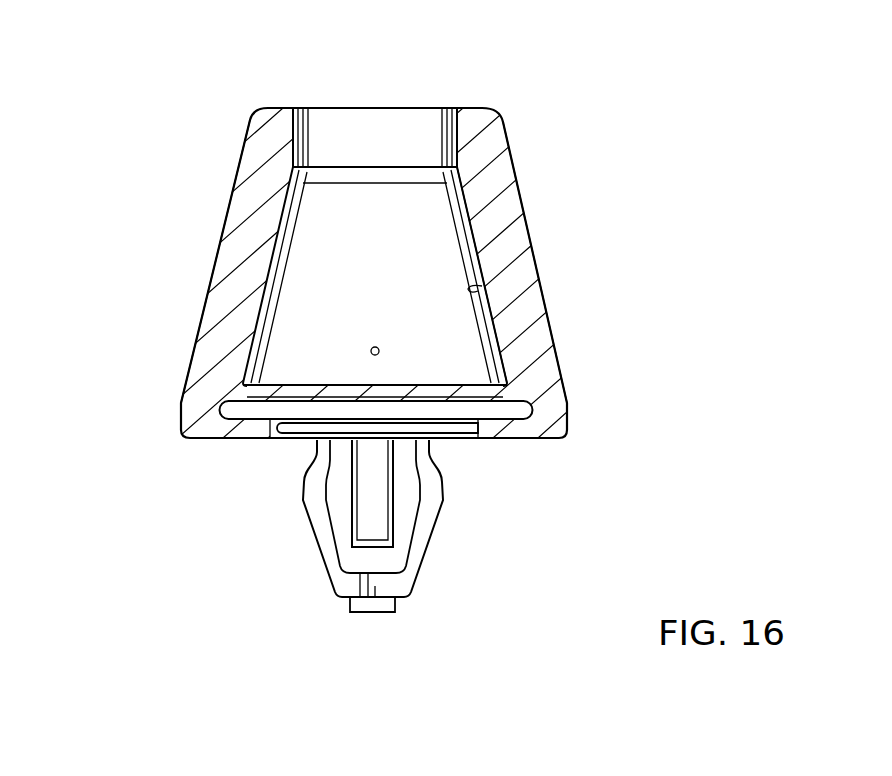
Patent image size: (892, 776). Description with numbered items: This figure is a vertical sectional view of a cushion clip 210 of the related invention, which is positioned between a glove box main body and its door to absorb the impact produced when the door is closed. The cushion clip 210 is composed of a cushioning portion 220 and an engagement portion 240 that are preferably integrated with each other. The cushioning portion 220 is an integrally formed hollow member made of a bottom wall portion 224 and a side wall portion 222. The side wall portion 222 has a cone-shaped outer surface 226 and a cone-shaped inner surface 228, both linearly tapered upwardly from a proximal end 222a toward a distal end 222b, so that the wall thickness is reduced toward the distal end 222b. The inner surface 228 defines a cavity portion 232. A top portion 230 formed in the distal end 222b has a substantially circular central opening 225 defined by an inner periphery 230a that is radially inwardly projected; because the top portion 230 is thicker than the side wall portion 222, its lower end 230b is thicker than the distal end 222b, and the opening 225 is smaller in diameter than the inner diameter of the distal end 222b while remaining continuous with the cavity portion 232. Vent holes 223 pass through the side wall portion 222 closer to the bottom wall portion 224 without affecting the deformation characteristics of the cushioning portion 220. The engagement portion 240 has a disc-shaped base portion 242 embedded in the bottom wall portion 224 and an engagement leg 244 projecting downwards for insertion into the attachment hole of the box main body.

The cushion clip 210 is at (517, 50).
The cushioning portion 220 is at (516, 155).
The side wall portion 222 is at (243, 278).
The proximal end 222a is at (522, 387).
The distal end 222b is at (483, 185).
The vent holes 223 is at (370, 351).
The bottom wall portion 224 is at (392, 395).
The central opening 225 is at (375, 135).
The outer surface 226 is at (533, 231).
The inner surface 228 is at (482, 286).
The top portion 230 is at (482, 113).
The inner periphery 230a is at (455, 130).
The lower end 230b is at (445, 183).
The cavity portion 232 is at (372, 247).
The engagement portion 240 is at (447, 520).
The base portion 242 is at (488, 410).
The engagement leg 244 is at (417, 556).